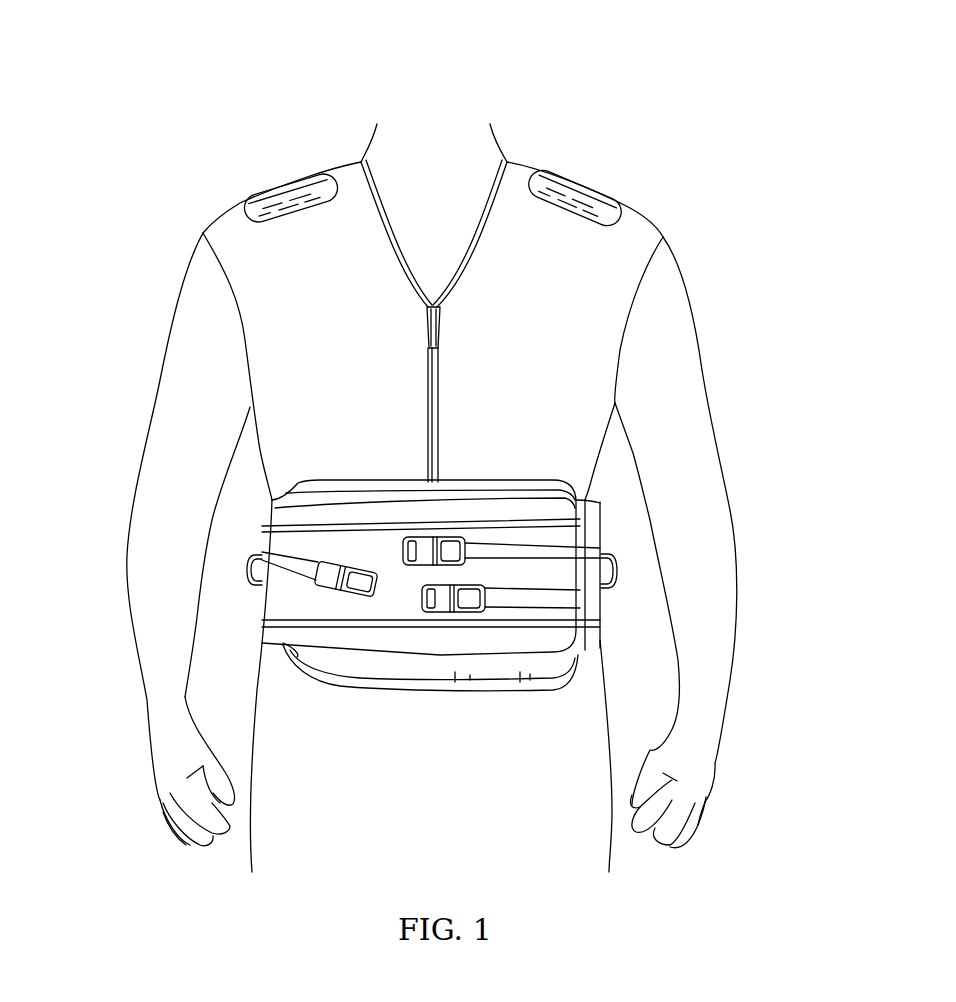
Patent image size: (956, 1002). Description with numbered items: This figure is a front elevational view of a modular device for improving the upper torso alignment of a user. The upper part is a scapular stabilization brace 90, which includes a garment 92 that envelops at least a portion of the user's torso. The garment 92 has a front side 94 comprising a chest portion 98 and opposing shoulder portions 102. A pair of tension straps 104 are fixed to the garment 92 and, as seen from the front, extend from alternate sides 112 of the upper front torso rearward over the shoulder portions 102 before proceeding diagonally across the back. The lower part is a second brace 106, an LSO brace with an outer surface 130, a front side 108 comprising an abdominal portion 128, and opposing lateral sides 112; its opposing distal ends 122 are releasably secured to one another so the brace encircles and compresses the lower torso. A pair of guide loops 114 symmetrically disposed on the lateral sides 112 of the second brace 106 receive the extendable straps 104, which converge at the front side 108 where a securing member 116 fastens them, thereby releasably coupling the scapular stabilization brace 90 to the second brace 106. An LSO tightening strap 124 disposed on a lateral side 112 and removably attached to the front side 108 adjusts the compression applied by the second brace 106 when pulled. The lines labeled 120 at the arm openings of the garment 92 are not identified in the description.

The scapular stabilization brace 90 is at (310, 167).
The garment 92 is at (590, 267).
The front side 94 is at (220, 217).
The chest portion 98 is at (487, 337).
The shoulder portions 102 is at (523, 163).
The tension straps 104 is at (505, 548).
The second brace 106 is at (353, 697).
The front side 108 is at (563, 637).
The opposing lateral sides 112 is at (560, 553).
The guide loops 114 is at (617, 570).
The securing member 116 is at (445, 540).
The arm opening 120 is at (240, 325).
The opposing distal ends 122 is at (580, 496).
The LSO tightening strap 124 is at (505, 606).
The abdominal portion 128 is at (401, 588).
The outer surface 130 is at (290, 605).